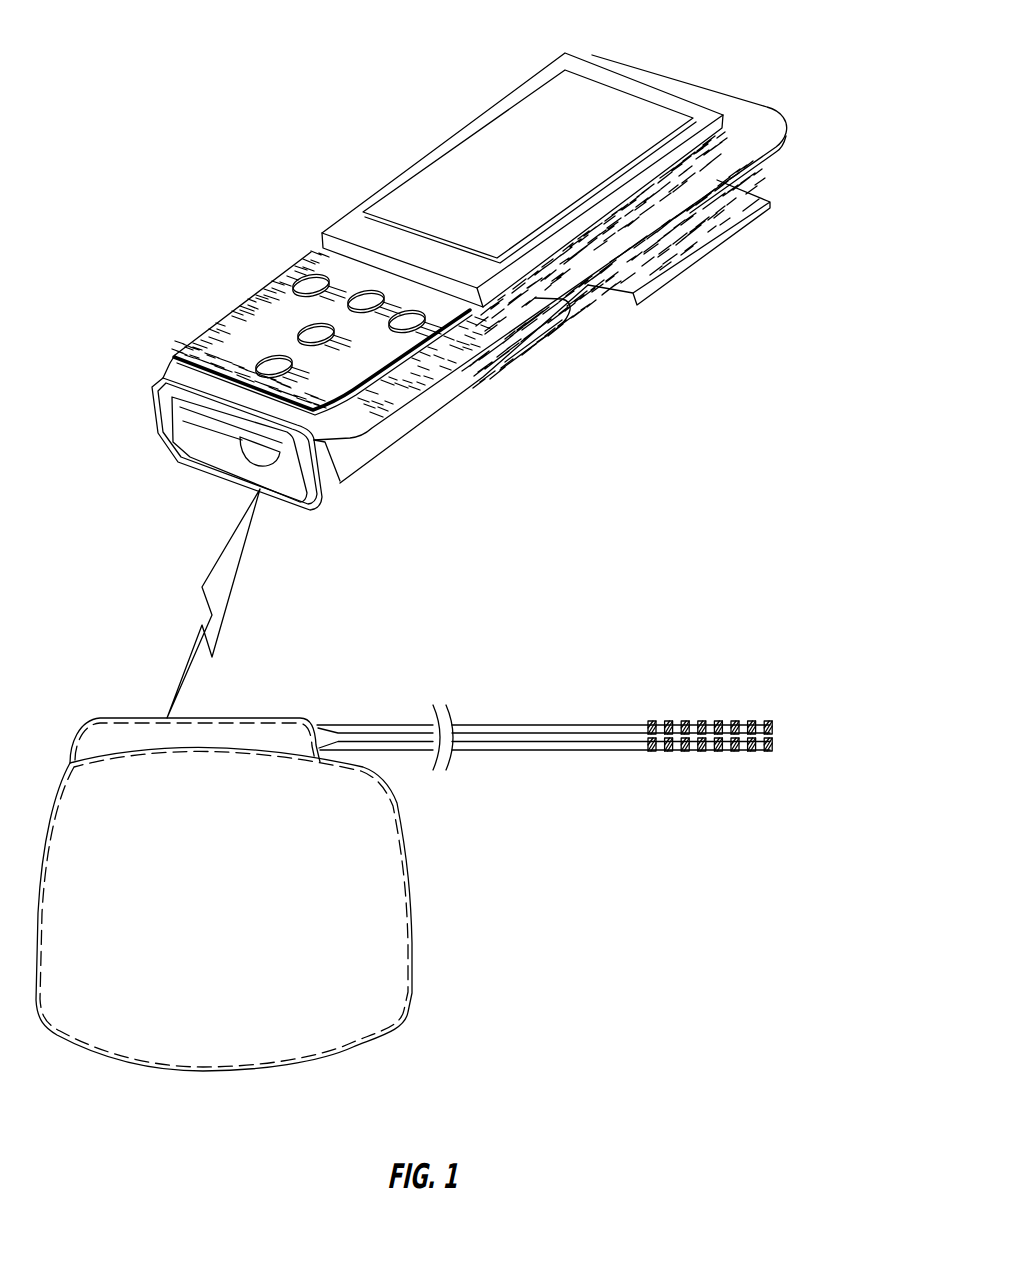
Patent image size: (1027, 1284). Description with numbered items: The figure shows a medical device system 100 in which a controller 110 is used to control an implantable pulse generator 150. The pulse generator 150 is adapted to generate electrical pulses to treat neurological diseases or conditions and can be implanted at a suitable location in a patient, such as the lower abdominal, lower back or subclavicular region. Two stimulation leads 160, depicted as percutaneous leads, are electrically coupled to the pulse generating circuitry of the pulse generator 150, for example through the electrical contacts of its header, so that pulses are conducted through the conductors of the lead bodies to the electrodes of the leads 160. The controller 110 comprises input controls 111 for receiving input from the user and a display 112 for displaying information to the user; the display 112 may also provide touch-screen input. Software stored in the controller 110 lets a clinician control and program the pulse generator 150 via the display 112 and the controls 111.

The medical device system 100 is at (222, 40).
The controller 110 is at (323, 184).
The input controls 111 is at (258, 287).
The display 112 is at (548, 174).
The implantable pulse generator 150 is at (233, 1073).
The stimulation leads 160 is at (553, 721).